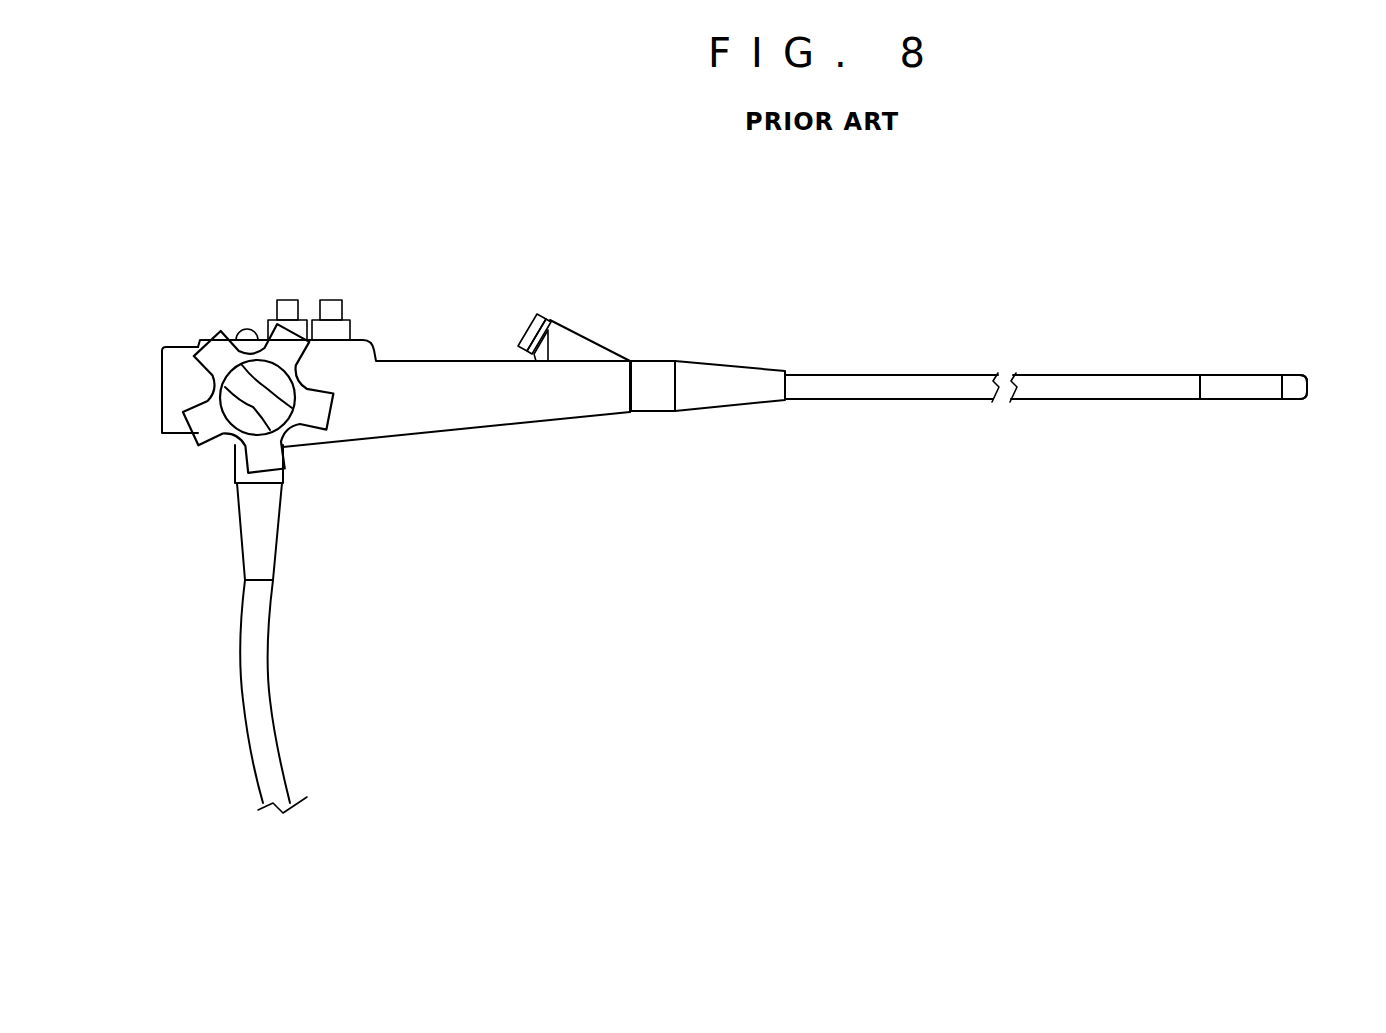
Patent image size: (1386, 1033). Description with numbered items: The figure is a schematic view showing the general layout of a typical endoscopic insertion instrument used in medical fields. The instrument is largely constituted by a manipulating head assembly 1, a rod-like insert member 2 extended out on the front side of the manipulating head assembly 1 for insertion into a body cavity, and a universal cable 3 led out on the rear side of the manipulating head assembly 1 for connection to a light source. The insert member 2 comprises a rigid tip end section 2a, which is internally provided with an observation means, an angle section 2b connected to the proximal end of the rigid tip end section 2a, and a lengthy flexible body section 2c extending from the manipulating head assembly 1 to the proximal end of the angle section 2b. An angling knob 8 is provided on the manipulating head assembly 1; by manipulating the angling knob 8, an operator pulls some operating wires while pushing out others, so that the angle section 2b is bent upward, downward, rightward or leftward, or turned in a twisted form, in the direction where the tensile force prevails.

The manipulating head assembly 1 is at (507, 380).
The rod-like insert member 2 is at (1071, 431).
The rigid tip end section 2a is at (1288, 398).
The angle section 2b is at (1223, 394).
The flexible body section 2c is at (867, 397).
The universal cable 3 is at (258, 713).
The angling knob 8 is at (303, 415).